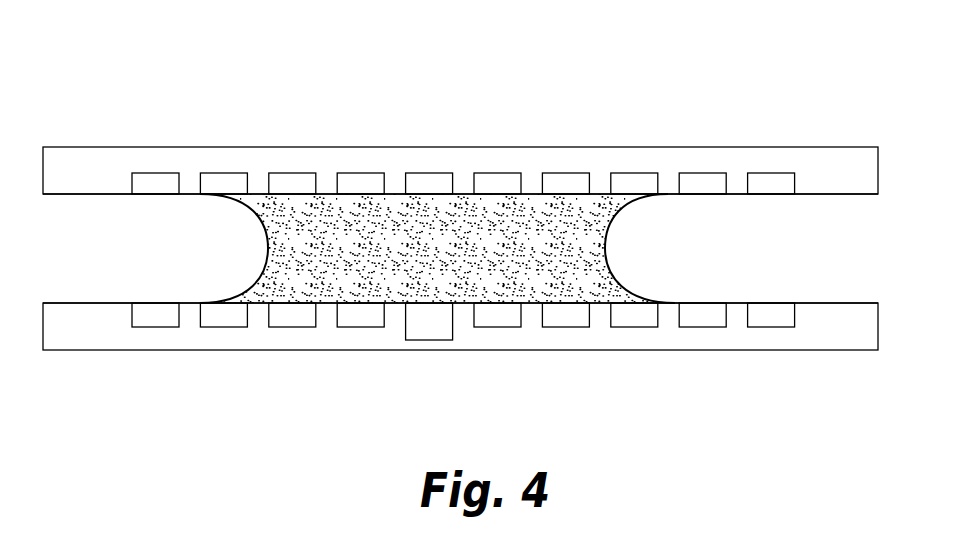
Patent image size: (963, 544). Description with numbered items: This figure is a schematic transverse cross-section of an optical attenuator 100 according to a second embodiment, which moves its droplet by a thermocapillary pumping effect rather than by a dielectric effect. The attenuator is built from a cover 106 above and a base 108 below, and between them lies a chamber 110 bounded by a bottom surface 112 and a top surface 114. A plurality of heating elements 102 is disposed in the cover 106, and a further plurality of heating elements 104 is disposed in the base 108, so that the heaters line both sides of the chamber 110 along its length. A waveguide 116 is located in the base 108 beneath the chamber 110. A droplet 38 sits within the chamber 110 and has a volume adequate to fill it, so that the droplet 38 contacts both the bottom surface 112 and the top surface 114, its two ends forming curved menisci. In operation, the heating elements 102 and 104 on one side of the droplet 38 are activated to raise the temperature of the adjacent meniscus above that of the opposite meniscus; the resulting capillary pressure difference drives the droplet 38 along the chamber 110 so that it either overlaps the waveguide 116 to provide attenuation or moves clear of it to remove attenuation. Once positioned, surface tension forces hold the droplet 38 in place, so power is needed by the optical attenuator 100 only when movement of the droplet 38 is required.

The optical attenuator 100 is at (811, 69).
The heating elements 102 is at (228, 181).
The heating elements 104 is at (297, 317).
The cover 106 is at (641, 158).
The base 108 is at (650, 340).
The chamber 110 is at (839, 235).
The bottom surface 112 is at (103, 302).
The top surface 114 is at (98, 196).
The waveguide 116 is at (435, 320).
The droplet 38 is at (590, 228).